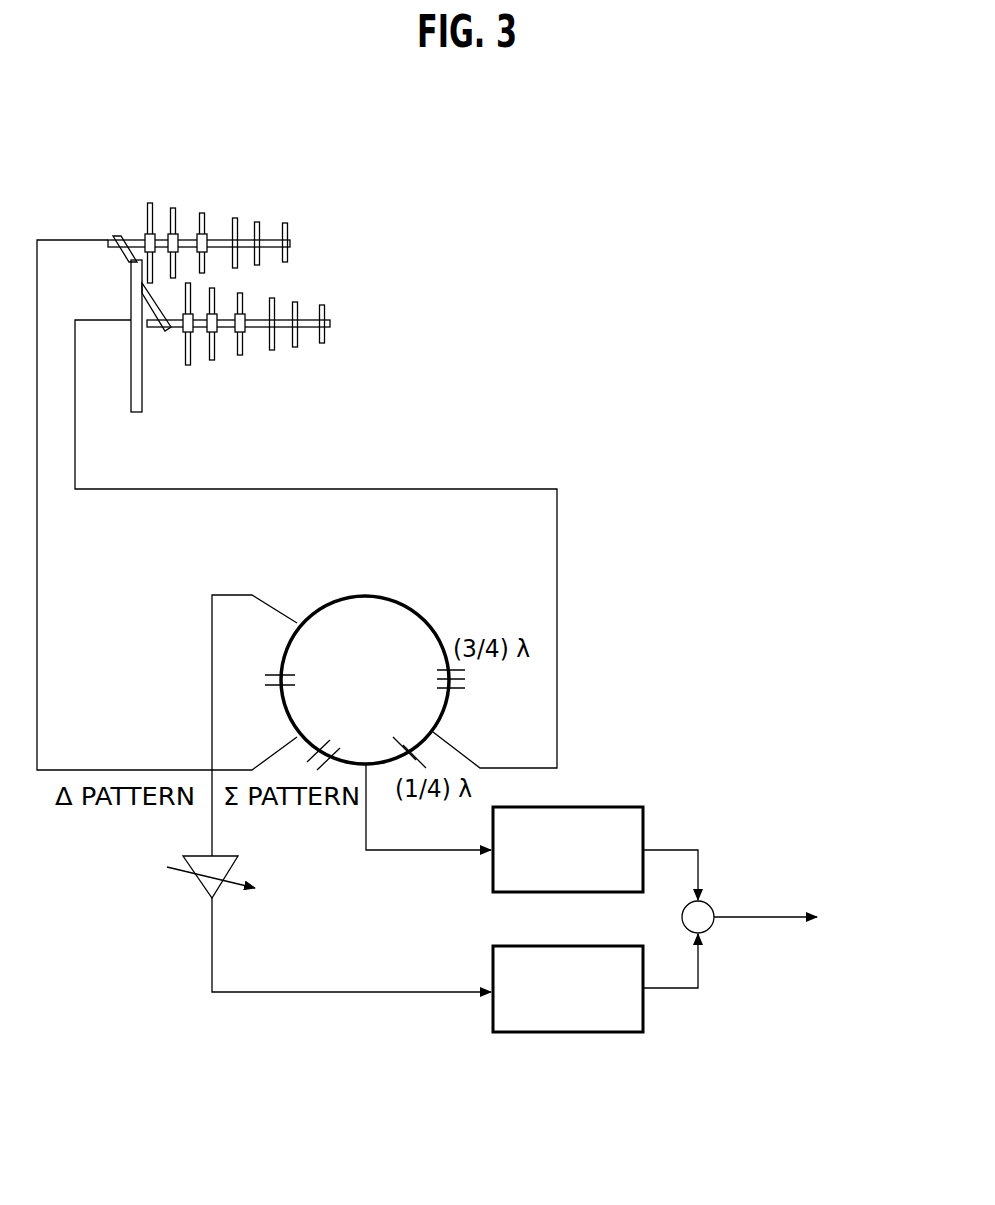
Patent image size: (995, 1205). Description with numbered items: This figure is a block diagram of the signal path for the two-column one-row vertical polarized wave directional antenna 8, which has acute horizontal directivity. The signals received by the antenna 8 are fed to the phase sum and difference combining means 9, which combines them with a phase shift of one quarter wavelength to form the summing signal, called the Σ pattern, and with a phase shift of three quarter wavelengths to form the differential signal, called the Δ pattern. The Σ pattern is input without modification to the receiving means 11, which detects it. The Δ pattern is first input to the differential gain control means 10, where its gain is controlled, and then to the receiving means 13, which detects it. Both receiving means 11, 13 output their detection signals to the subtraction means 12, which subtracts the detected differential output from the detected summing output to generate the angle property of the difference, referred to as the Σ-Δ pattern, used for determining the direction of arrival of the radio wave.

The two-column one-row vertical polarized wave directional antenna 8 is at (142, 412).
The phase sum and difference combining means 9 is at (302, 612).
The gain control means 10 is at (222, 892).
The receiving means 11 is at (615, 892).
The subtraction means 12 is at (705, 901).
The receiving means 13 is at (573, 1032).